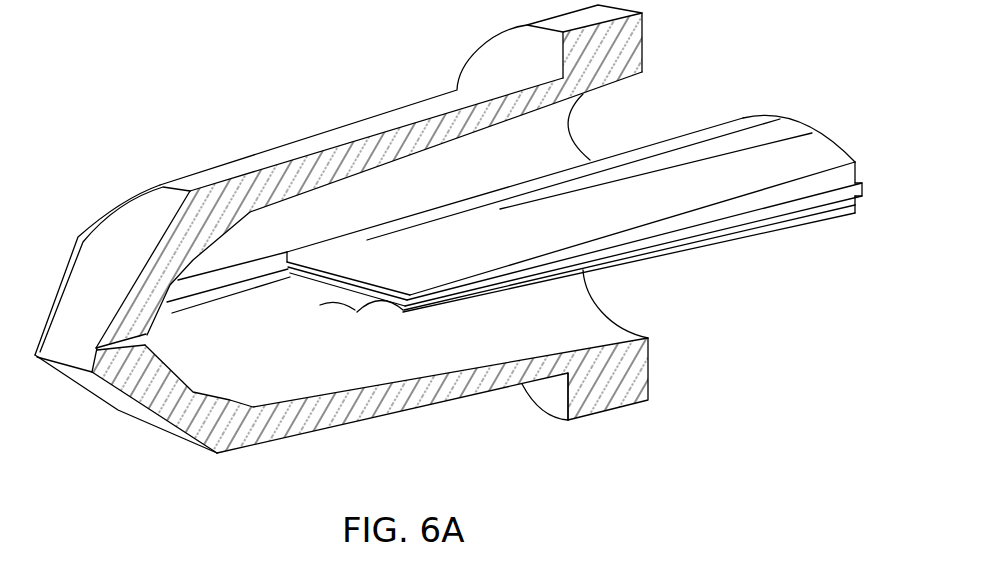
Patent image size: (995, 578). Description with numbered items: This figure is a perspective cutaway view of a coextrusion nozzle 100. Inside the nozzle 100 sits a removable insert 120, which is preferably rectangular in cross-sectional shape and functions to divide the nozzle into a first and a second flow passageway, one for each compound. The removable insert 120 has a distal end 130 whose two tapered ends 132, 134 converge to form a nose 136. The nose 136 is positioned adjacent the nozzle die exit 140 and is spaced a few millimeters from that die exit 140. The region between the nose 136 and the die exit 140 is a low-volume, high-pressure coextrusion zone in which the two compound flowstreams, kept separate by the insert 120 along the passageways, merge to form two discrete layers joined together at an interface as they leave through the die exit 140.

The coextrusion nozzle 100 is at (242, 98).
The removable insert 120 is at (687, 133).
The distal end 130 is at (293, 291).
The tapered end 132 is at (355, 247).
The tapered end 134 is at (388, 307).
The nose 136 is at (330, 304).
The die exit 140 is at (97, 348).